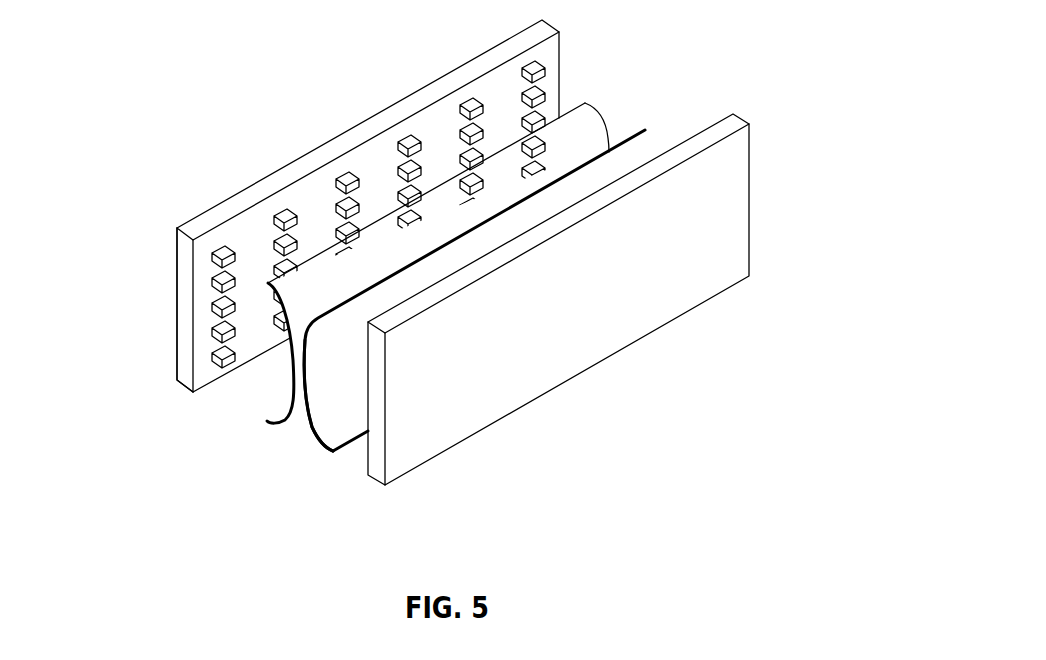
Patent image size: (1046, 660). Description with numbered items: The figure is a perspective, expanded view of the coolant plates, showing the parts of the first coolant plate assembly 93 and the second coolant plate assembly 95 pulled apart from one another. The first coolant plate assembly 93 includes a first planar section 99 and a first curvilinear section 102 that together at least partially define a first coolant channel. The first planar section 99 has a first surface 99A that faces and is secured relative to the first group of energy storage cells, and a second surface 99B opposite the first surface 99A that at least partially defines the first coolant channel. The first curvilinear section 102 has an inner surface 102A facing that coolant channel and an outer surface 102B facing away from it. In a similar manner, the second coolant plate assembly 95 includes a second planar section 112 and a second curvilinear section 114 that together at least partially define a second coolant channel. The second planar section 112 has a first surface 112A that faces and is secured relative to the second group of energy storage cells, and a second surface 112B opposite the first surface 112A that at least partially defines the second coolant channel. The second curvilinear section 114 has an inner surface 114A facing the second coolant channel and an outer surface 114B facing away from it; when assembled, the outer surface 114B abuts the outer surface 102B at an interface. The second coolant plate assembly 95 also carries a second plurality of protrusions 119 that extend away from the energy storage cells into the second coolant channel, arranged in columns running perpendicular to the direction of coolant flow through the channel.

The first coolant plate assembly 93 is at (276, 509).
The second coolant plate assembly 95 is at (125, 411).
The first planar section 99 is at (596, 303).
The first surface 99A is at (737, 188).
The second surface 99B is at (718, 116).
The first curvilinear section 102 is at (388, 296).
The inner surface 102A is at (320, 413).
The outer surface 102B is at (617, 180).
The second planar section 112 is at (366, 200).
The first surface 112A is at (177, 263).
The second surface 112B is at (553, 46).
The second curvilinear section 114 is at (231, 390).
The inner surface 114A is at (292, 358).
The outer surface 114B is at (298, 410).
The second plurality of protrusions 119 is at (282, 210).